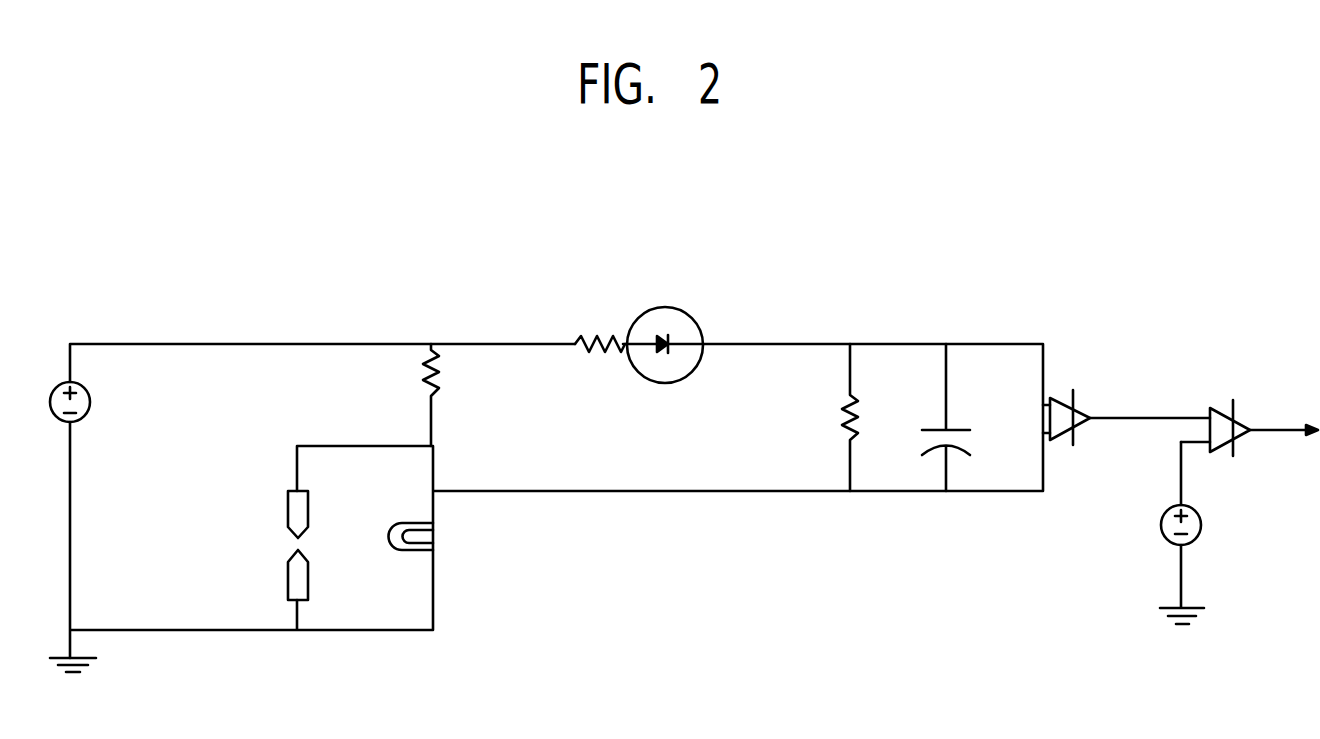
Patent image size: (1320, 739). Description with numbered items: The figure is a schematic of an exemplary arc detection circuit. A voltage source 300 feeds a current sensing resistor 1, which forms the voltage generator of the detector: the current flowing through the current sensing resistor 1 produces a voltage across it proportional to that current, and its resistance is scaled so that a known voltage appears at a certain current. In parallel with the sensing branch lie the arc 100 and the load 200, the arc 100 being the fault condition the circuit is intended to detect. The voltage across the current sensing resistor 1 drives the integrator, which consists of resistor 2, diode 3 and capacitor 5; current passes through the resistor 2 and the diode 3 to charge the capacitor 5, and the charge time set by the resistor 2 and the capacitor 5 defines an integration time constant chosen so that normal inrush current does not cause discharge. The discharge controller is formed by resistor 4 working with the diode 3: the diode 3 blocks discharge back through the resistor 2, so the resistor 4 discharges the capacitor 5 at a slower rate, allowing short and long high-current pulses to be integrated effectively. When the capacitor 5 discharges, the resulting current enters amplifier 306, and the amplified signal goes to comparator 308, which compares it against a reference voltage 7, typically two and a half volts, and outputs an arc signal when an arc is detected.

The current sensing resistor 1 is at (422, 381).
The resistor 2 is at (590, 337).
The diode 3 is at (664, 384).
The resistor 4 is at (843, 419).
The capacitor 5 is at (966, 431).
The reference voltage 7 is at (1160, 526).
The arc 100 is at (286, 545).
The load 200 is at (436, 537).
The voltage source 300 is at (90, 402).
The amplifier 306 is at (1058, 398).
The comparator 308 is at (1236, 411).